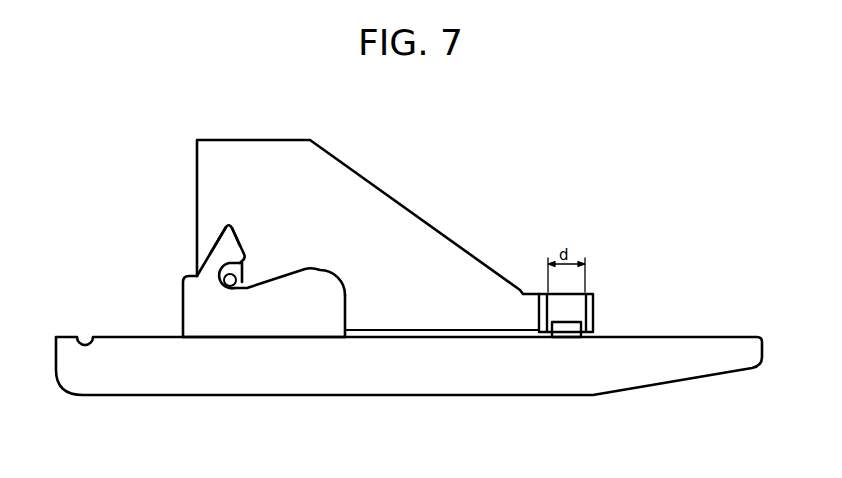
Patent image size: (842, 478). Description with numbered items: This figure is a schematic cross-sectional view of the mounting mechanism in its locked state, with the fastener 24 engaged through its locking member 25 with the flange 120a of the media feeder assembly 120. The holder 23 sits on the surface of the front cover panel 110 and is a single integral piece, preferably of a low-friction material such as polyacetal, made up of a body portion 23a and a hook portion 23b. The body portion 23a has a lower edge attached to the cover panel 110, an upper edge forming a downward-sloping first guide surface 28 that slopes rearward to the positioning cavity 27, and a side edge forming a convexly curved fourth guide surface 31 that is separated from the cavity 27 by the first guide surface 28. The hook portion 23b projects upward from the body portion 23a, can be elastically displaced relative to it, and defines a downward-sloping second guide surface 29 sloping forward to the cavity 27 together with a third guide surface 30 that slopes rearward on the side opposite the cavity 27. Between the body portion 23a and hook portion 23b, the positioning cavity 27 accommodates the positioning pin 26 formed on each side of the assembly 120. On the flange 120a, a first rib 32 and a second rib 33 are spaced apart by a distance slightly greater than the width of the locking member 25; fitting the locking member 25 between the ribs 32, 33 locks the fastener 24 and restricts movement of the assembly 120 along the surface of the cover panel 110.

The front cover panel 110 is at (353, 405).
The media feeder assembly 120 is at (380, 184).
The flange 120a is at (570, 292).
The holder 23 is at (176, 306).
The body portion 23a is at (297, 330).
The hook portion 23b is at (225, 242).
The fastener 24 is at (632, 284).
The locking member 25 is at (567, 330).
The positioning pin 26 is at (243, 277).
The positioning cavity 27 is at (233, 286).
The first guide surface 28 is at (310, 268).
The second guide surface 29 is at (238, 242).
The third guide surface 30 is at (212, 252).
The fourth guide surface 31 is at (345, 312).
The first rib 32 is at (590, 310).
The second rib 33 is at (543, 313).